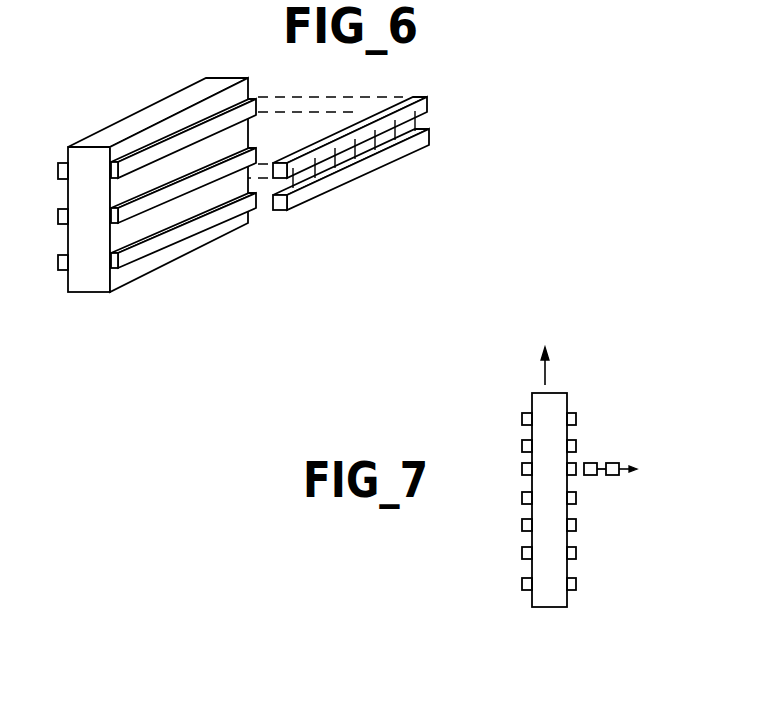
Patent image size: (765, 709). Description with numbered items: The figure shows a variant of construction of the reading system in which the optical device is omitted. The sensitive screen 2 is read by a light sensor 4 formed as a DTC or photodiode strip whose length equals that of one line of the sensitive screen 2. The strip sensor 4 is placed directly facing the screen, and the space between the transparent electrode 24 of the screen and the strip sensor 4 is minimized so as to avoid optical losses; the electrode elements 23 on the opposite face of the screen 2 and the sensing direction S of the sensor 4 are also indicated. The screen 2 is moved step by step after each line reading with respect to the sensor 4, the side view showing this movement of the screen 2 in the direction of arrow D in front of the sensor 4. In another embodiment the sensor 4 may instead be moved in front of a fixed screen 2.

In FIG. 6, the sensitive screen 2 is at (90, 278).
In FIG. 7, the sensitive screen 2 is at (550, 597).
In FIG. 6, the projections on left side of block 23 is at (58, 258).
In FIG. 7, the projections on left side of block 23 is at (522, 587).
In FIG. 6, the transparent electrode 24 is at (143, 250).
In FIG. 7, the transparent electrode 24 is at (576, 579).
In FIG. 6, the sensor 4 is at (428, 103).
In FIG. 7, the sensor 4 is at (592, 463).
In FIG. 6, the sensing direction S is at (442, 129).
In FIG. 7, the sensing direction S is at (634, 471).
In FIG. 7, the arrow D is at (559, 365).